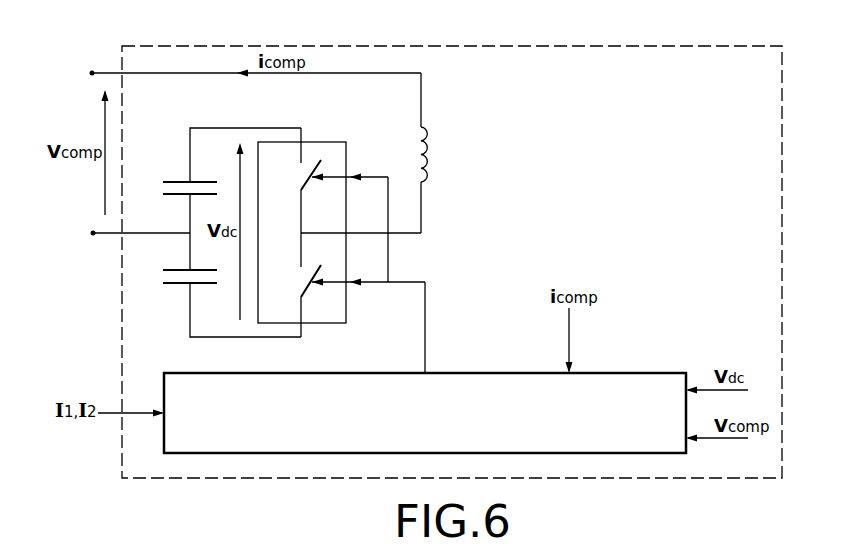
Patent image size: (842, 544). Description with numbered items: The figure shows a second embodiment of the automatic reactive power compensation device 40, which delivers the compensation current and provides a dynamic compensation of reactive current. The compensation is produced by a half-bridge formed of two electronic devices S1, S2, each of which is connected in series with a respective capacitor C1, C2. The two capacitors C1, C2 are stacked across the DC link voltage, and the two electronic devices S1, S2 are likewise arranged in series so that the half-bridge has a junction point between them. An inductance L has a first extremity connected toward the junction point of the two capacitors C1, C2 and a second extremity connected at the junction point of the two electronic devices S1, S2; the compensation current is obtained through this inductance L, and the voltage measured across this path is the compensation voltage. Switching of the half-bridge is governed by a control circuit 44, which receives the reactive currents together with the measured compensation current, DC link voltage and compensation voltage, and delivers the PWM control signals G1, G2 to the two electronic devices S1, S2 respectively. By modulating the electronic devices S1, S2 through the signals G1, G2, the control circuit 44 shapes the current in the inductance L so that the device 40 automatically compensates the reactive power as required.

The automatic reactive power compensation device 40 is at (217, 46).
The control circuit 44 is at (436, 422).
The inductance L is at (432, 153).
The capacitor C1 is at (184, 174).
The capacitor C2 is at (185, 291).
The electronic device S1 is at (296, 180).
The electronic device S2 is at (296, 285).
The PWM control signal G1 is at (368, 314).
The PWM control signal G2 is at (350, 216).